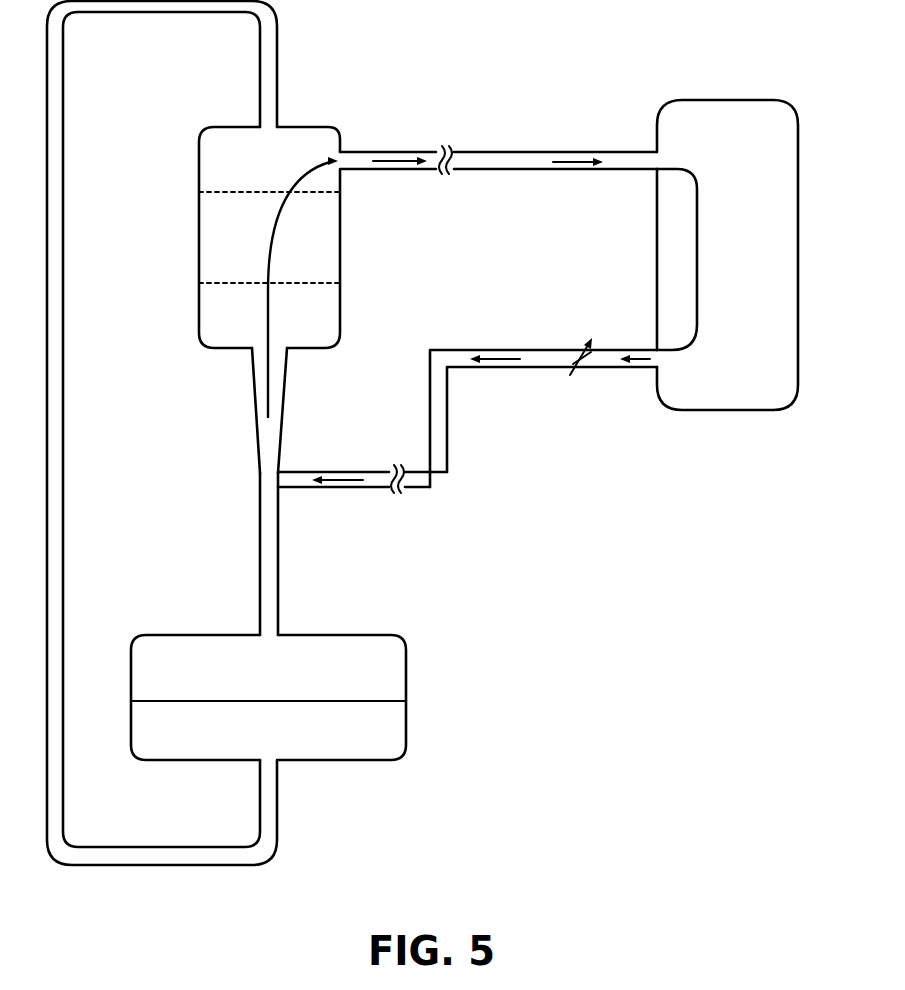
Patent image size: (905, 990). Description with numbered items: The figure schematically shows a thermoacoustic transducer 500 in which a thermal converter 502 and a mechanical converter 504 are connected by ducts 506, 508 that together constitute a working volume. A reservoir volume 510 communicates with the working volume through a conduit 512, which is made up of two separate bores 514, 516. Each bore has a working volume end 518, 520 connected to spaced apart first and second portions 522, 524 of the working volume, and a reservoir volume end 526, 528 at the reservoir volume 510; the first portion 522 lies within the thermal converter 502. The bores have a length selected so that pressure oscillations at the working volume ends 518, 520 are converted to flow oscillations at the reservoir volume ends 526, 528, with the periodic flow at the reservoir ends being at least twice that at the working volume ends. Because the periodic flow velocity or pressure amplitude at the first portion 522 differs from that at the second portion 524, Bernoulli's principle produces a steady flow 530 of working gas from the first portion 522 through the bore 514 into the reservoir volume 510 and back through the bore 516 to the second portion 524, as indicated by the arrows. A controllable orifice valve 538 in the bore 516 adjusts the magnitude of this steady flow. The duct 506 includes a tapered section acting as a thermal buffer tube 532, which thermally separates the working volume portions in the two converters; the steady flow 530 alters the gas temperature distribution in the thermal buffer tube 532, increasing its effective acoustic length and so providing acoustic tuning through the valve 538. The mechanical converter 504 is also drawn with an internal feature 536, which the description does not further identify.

The thermoacoustic transducer 500 is at (521, 106).
The thermal converter 502 is at (195, 115).
The mechanical converter 504 is at (407, 622).
The duct 506 is at (260, 540).
The duct 508 is at (65, 538).
The reservoir volume 510 is at (728, 100).
The conduit 512 is at (556, 193).
The bore 514 is at (535, 171).
The bore 516 is at (535, 348).
The working volume end 518 is at (343, 172).
The working volume end 520 is at (281, 489).
The first portion of the working volume 522 is at (335, 147).
The second portion of the working volume 524 is at (269, 470).
The reservoir volume end 526 is at (657, 172).
The reservoir volume end 528 is at (654, 368).
The steady flow 530 is at (272, 213).
The thermal buffer tube 532 is at (251, 349).
The fluid level 536 is at (380, 703).
The controllable orifice valve 538 is at (583, 372).